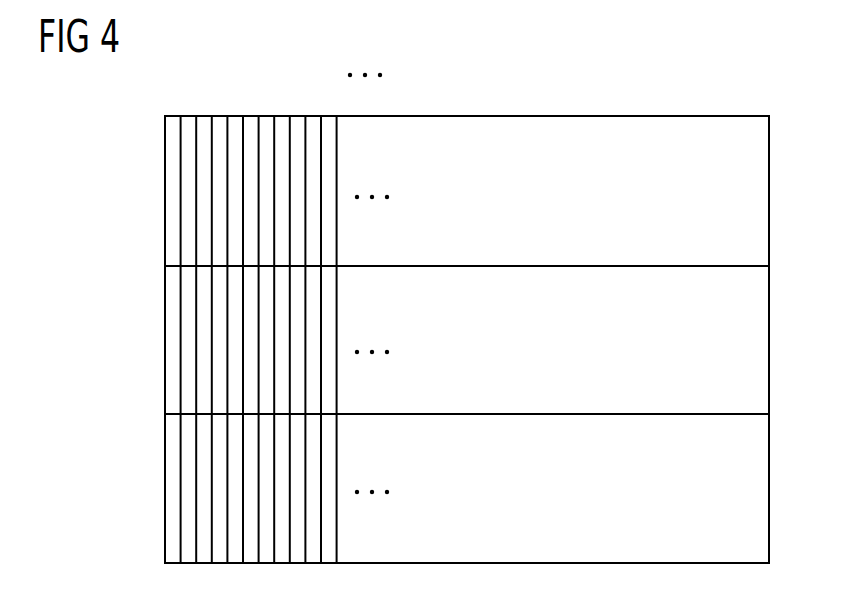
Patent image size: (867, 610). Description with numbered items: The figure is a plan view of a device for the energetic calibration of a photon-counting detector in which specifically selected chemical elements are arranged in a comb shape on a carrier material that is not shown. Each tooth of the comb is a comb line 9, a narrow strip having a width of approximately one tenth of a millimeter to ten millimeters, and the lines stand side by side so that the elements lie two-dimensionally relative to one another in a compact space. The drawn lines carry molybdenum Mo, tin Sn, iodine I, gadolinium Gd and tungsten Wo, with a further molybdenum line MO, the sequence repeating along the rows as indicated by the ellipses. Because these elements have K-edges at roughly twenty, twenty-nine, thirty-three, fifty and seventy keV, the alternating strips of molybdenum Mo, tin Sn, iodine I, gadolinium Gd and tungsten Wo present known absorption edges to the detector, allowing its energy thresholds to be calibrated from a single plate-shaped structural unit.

The comb line 9 is at (327, 252).
The molybdenum Mo is at (176, 127).
The tin Sn is at (189, 127).
The iodine I is at (206, 127).
The gadolinium Gd is at (221, 127).
The tungsten Wo is at (237, 127).
The molybdenum MO is at (253, 127).